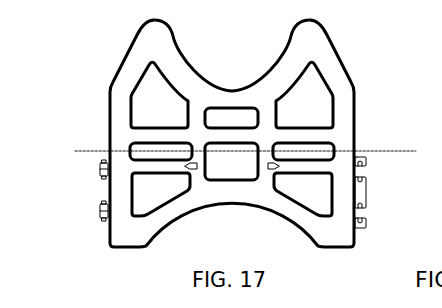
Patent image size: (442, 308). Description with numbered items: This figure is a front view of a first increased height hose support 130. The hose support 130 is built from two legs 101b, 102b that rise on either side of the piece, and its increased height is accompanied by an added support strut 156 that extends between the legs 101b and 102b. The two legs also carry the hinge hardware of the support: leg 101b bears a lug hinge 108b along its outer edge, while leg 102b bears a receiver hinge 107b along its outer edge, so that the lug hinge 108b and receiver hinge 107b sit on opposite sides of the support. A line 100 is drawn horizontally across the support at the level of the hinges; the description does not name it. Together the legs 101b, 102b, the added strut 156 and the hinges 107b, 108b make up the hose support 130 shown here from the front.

The first increased height hose support 130 is at (113, 62).
The centerline 100 is at (247, 137).
The leg 101b is at (118, 115).
The leg 102b is at (341, 115).
The receiver hinge 107b is at (363, 152).
The lug hinge 108b is at (100, 172).
The added support strut 156 is at (175, 128).